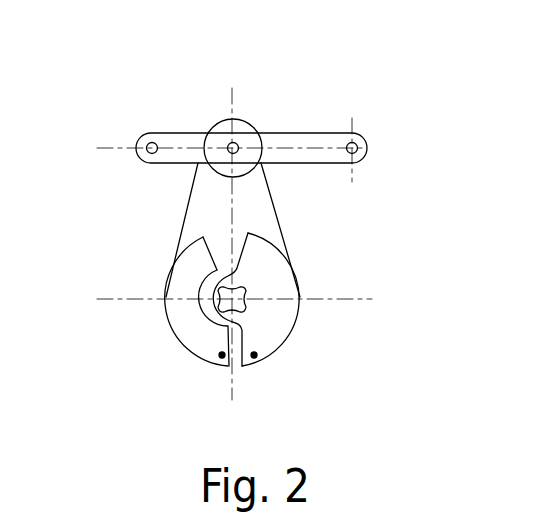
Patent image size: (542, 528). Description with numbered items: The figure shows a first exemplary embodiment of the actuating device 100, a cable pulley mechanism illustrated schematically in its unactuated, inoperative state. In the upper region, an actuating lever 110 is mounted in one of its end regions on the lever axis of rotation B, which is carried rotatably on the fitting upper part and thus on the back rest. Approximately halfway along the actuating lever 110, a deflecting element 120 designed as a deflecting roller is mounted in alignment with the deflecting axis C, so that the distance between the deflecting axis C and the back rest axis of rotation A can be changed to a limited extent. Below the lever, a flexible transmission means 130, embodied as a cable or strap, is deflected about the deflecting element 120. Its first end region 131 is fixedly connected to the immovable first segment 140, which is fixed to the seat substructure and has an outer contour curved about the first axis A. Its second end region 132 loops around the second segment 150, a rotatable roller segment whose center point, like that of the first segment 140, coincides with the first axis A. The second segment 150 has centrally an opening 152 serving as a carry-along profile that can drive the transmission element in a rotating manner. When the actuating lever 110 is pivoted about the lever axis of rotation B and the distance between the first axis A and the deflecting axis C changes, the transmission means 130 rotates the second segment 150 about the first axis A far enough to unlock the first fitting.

The actuating device 100 is at (208, 243).
The actuating lever 110 is at (280, 147).
The deflecting element 120 is at (238, 129).
The transmission means 130 is at (278, 208).
The first end region 131 is at (222, 358).
The second end region 132 is at (253, 358).
The first segment 140 is at (166, 320).
The second segment 150 is at (278, 323).
The opening 152 is at (199, 306).
The first axis A is at (247, 290).
The lever axis of rotation B is at (352, 131).
The deflecting axis C is at (231, 145).